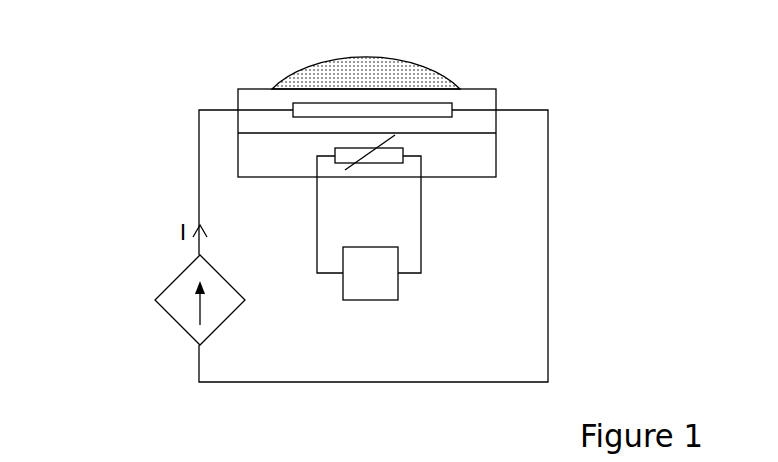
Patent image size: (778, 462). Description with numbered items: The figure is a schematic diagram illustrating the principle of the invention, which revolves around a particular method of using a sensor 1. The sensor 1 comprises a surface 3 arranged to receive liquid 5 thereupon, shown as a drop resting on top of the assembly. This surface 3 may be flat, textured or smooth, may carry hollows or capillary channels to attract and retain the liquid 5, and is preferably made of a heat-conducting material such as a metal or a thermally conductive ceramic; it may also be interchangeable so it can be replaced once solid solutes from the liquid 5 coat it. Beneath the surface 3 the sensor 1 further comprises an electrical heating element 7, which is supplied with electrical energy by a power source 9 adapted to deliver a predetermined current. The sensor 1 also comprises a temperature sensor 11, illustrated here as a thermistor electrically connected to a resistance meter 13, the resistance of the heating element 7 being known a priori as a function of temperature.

The sensor 1 is at (510, 143).
The surface 3 is at (470, 89).
The liquid 5 is at (343, 63).
The electrical heating element 7 is at (311, 112).
The power source 9 is at (168, 286).
The temperature sensor 11 is at (399, 152).
The resistance meter 13 is at (390, 285).